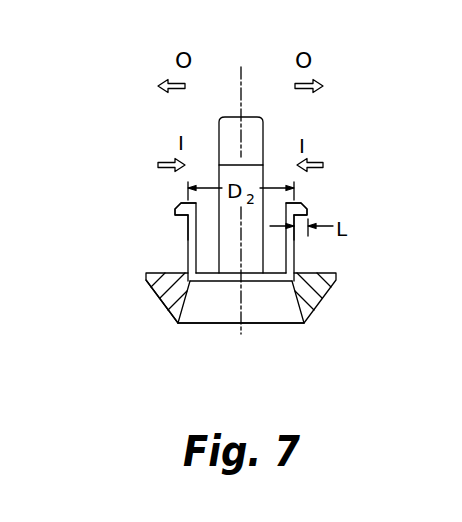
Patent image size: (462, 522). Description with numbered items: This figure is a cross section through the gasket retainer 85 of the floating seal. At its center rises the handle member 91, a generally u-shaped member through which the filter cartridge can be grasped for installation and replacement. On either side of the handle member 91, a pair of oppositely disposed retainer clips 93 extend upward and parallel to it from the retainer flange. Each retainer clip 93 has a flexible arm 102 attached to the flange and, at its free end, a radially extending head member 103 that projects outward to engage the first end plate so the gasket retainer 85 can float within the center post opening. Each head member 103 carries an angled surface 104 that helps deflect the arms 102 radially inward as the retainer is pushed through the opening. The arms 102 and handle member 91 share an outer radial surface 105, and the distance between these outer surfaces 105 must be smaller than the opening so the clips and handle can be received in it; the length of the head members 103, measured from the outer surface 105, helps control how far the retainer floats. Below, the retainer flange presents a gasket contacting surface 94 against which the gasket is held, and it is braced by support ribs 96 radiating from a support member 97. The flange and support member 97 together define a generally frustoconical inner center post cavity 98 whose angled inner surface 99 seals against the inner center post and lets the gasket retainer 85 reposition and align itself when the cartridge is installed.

The gasket retainer 85 is at (255, 118).
The handle member 91 is at (228, 118).
The retainer clips 93 is at (187, 222).
The gasket contacting surface 94 is at (150, 273).
The support ribs 96 is at (167, 307).
The support member 97 is at (298, 301).
The inner center post cavity 98 is at (330, 273).
The inner surface 99 is at (194, 328).
The arm 102 is at (295, 242).
The head member 103 is at (306, 211).
The angled surface 104 is at (177, 208).
The outer radial surface 105 is at (187, 240).